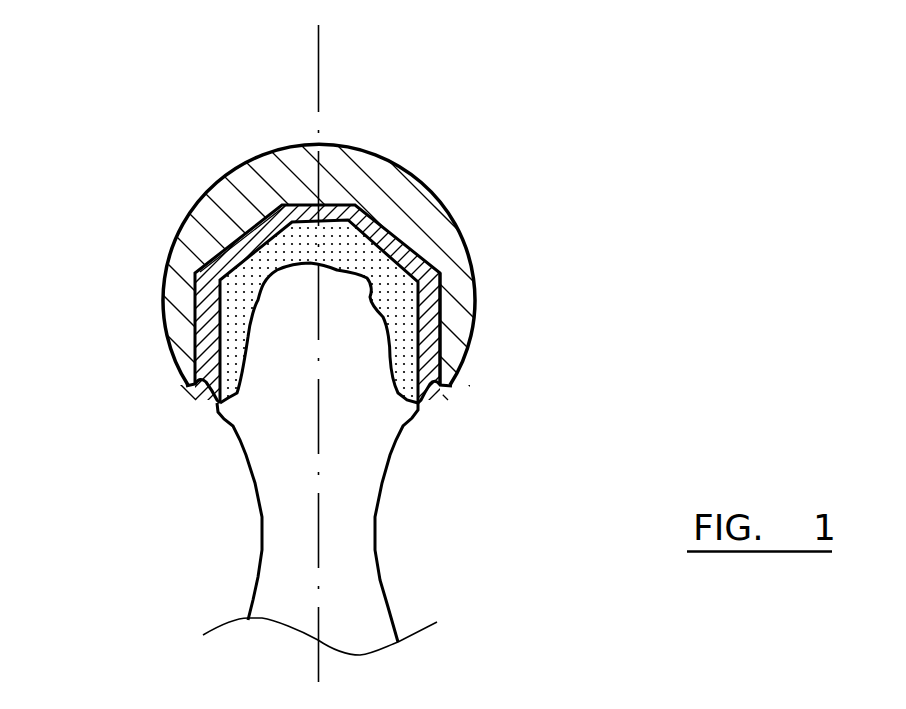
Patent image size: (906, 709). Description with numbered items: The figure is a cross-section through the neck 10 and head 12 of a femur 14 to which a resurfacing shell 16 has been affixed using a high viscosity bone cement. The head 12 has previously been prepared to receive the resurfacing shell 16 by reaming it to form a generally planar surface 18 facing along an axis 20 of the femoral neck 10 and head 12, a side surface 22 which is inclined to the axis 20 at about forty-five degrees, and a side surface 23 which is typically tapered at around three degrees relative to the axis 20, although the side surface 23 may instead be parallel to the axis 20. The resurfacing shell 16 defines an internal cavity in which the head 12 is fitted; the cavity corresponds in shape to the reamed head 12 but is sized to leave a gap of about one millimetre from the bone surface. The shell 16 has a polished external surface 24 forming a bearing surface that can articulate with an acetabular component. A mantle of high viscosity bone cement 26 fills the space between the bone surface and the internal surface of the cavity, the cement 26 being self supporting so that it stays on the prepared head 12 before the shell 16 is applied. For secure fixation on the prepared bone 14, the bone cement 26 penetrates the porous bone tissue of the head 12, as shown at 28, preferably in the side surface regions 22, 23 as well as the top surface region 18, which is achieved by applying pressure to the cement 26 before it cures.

The neck 10 is at (340, 556).
The head 12 is at (293, 366).
The femur 14 is at (238, 497).
The resurfacing shell 16 is at (163, 303).
The generally planar surface 18 is at (335, 207).
The axis 20 is at (318, 75).
The side surface 22 is at (398, 237).
The side surface 23 is at (446, 345).
The external surface 24 is at (227, 176).
The high viscosity bone cement 26 is at (432, 296).
The cement penetration 28 is at (240, 262).